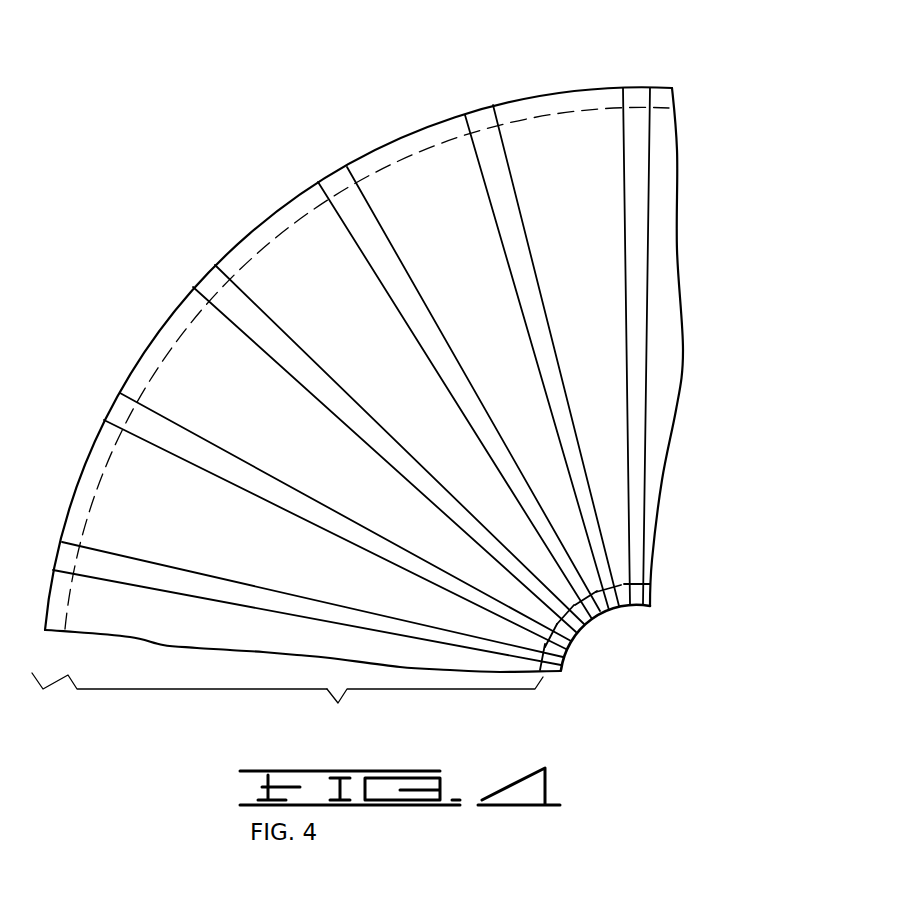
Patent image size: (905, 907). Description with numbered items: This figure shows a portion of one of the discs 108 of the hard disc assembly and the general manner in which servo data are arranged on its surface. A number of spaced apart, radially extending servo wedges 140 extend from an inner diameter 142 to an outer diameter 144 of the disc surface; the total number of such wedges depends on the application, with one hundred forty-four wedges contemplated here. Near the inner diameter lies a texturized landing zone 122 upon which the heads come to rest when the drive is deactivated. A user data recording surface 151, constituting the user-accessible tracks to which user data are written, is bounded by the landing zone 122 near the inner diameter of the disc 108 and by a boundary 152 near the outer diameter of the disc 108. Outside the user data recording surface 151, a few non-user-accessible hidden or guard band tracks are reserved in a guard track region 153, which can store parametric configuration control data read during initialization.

The disc 108 is at (253, 170).
The outer diameter 144 is at (203, 270).
The servo wedges 140 is at (259, 351).
The boundary 152 is at (578, 106).
The landing zone 122 is at (620, 583).
The inner diameter 142 is at (583, 625).
The guard track region 153 is at (50, 690).
The user data recording surface 151 is at (338, 703).